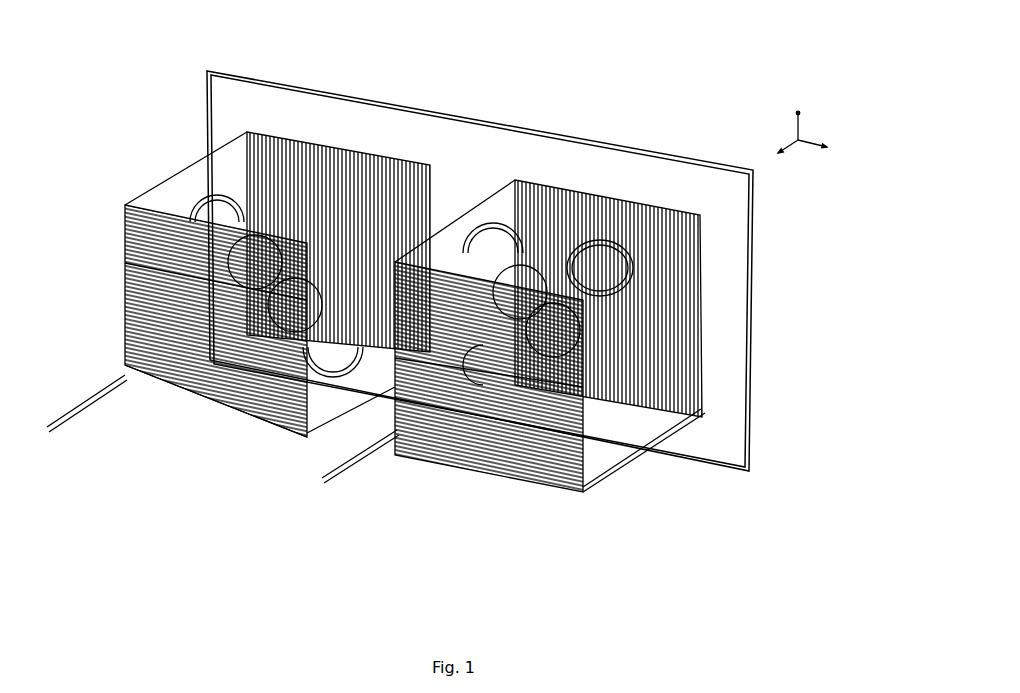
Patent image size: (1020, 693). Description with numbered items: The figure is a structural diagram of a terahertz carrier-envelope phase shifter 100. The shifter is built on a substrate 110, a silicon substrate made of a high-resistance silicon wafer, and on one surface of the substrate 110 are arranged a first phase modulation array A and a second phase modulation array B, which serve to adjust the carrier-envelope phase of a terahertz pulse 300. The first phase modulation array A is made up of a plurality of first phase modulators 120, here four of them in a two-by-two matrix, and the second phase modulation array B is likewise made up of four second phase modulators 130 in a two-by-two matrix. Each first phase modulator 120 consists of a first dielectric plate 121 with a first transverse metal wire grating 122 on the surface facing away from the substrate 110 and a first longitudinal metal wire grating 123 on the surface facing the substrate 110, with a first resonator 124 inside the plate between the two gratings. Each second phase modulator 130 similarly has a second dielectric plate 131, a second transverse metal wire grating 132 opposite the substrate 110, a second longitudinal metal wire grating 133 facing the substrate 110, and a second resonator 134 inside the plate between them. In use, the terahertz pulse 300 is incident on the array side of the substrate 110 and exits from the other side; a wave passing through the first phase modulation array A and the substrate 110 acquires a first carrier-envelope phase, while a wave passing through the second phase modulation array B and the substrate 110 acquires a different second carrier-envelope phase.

The terahertz carrier-envelope phase shifter 100 is at (658, 73).
The substrate 110 is at (480, 246).
The first phase modulator 120 is at (177, 49).
The first dielectric plate 121 is at (142, 195).
The first transverse metal wire grating 122 is at (123, 263).
The first longitudinal metal wire grating 123 is at (305, 140).
The first resonator 124 is at (203, 189).
The second phase modulator 130 is at (848, 387).
The second dielectric plate 131 is at (628, 470).
The second transverse metal wire grating 132 is at (585, 495).
The second longitudinal metal wire grating 133 is at (706, 366).
The second resonator 134 is at (636, 410).
The terahertz pulse 300 is at (69, 433).
The first phase modulation array A is at (200, 399).
The second phase modulation array B is at (528, 462).